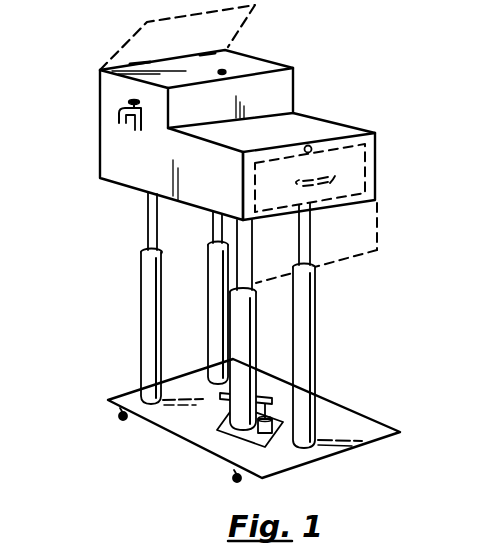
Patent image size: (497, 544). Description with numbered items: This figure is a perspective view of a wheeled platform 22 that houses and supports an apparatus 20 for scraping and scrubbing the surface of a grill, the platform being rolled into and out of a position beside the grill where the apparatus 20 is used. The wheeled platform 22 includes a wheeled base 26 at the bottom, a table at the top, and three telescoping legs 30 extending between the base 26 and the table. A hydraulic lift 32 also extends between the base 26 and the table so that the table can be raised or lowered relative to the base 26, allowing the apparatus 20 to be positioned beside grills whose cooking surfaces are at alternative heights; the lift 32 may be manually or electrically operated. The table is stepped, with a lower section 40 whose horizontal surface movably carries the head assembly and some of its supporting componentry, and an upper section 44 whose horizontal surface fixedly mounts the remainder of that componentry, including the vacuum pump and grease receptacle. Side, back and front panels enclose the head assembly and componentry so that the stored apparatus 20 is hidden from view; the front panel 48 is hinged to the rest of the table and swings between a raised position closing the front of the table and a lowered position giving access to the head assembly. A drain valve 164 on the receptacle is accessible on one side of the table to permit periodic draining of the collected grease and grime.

The apparatus 20 is at (257, 243).
The wheeled platform 22 is at (112, 191).
The wheeled base 26 is at (126, 396).
The telescoping legs 30 is at (213, 297).
The hydraulic lift 32 is at (243, 348).
The lower section 40 is at (376, 189).
The upper section 44 is at (302, 76).
The front panel 48 is at (377, 140).
The drain valve 164 is at (119, 113).